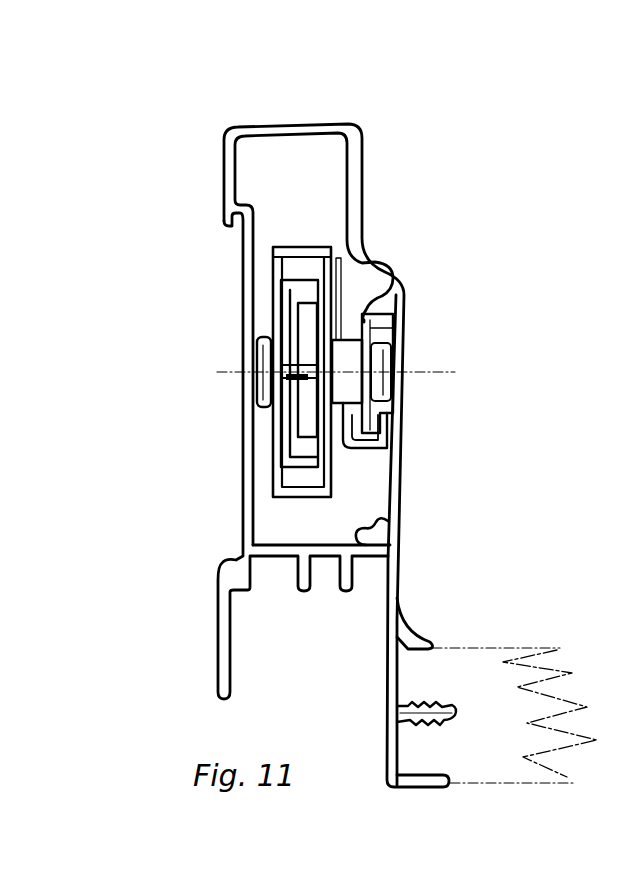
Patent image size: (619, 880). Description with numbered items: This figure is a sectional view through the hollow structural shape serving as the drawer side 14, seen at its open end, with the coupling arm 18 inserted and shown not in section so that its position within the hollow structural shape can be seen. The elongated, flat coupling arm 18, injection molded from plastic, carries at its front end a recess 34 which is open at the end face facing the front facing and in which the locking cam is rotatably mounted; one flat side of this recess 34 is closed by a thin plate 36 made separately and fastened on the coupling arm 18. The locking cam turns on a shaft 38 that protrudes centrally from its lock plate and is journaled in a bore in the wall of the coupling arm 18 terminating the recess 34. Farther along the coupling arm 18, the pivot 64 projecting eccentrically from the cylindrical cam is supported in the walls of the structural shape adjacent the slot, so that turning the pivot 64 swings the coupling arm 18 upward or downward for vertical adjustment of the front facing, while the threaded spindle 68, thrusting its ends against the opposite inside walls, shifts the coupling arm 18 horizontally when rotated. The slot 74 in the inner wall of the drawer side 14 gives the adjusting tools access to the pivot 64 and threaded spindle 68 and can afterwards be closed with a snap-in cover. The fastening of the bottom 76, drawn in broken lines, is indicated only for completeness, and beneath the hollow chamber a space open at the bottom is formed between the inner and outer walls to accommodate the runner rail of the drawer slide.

The drawer side 14 is at (293, 108).
The coupling arm 18 is at (309, 243).
The recess 34 is at (290, 423).
The thin plate 36 is at (337, 310).
The shaft 38 is at (273, 358).
The pivot 64 is at (380, 362).
The threaded spindle 68 is at (266, 363).
The slot 74 is at (400, 382).
The bottom 76 is at (490, 668).